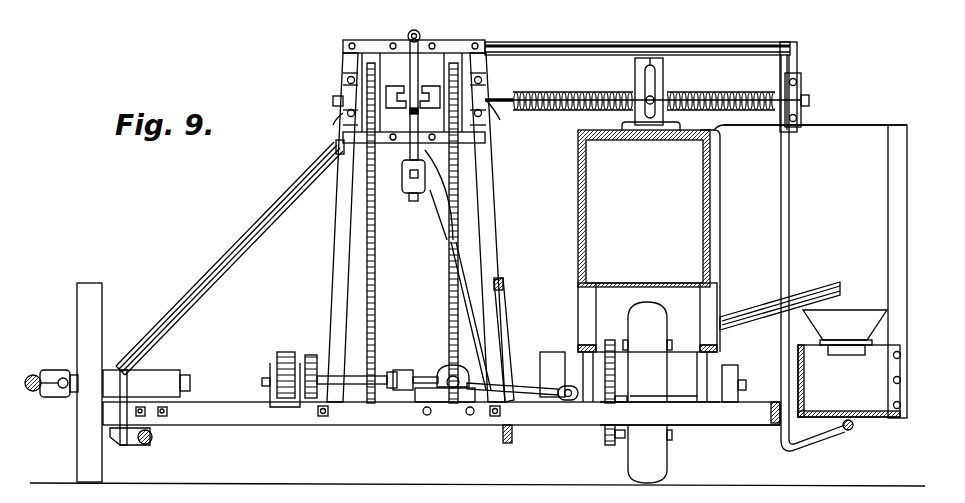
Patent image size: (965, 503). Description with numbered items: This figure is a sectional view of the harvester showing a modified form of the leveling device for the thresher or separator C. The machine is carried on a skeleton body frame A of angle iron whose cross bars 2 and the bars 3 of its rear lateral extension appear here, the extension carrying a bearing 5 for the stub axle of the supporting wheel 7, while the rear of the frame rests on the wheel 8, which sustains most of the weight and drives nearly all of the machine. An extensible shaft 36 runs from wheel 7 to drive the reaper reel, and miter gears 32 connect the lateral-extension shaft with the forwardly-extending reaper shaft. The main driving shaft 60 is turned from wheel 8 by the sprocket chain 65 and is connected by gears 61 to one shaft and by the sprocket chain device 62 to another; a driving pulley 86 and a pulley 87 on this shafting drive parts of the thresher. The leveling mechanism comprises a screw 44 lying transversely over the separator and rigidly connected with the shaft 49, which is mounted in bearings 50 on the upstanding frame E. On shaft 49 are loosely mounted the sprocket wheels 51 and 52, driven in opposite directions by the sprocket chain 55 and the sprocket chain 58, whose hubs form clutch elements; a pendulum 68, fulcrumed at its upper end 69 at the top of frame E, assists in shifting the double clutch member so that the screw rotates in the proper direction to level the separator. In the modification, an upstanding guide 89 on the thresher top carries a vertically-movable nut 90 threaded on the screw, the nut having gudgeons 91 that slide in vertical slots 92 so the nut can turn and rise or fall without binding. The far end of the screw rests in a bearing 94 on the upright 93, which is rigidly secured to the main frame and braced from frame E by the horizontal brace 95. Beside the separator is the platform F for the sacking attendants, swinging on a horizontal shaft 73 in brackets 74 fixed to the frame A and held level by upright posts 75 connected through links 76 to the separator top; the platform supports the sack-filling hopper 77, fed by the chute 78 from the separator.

The cross bars 2 is at (752, 422).
The bars 3 is at (236, 420).
The bearing 5 is at (170, 378).
The supporting wheel 7 is at (90, 322).
The wheel 8 is at (647, 392).
The miter gears 32 is at (441, 372).
The extensible shaft 36 is at (48, 372).
The leveling screw 44 is at (546, 110).
The shaft 49 is at (345, 86).
The bearings 50 is at (345, 112).
The sprocket wheel 51 is at (454, 70).
The sprocket wheel 52 is at (372, 70).
The sprocket chain 55 is at (450, 286).
The sprocket chain 58 is at (383, 292).
The main driving shaft 60 is at (535, 396).
The gears 61 is at (284, 358).
The sprocket chain device 62 is at (309, 358).
The sprocket chain 65 is at (606, 404).
The pendulum 68 is at (409, 196).
The fulcrum 69 is at (416, 30).
The horizontal shaft 73 is at (853, 426).
The brackets 74 is at (824, 446).
The upright posts 75 is at (906, 232).
The links 76 is at (846, 128).
The sack-filling hopper 77 is at (860, 322).
The chute 78 is at (814, 291).
The driving pulley 86 is at (548, 352).
The pulley 87 is at (736, 385).
The upstanding guide 89 is at (664, 74).
The nut 90 is at (646, 92).
The gudgeons 91 is at (646, 104).
The vertical slots 92 is at (651, 63).
The upright 93 is at (782, 222).
The bearing 94 is at (802, 100).
The horizontal brace 95 is at (740, 46).
The body frame A is at (688, 455).
The separator C is at (647, 266).
The upstanding frame E is at (340, 258).
The platform F is at (849, 381).